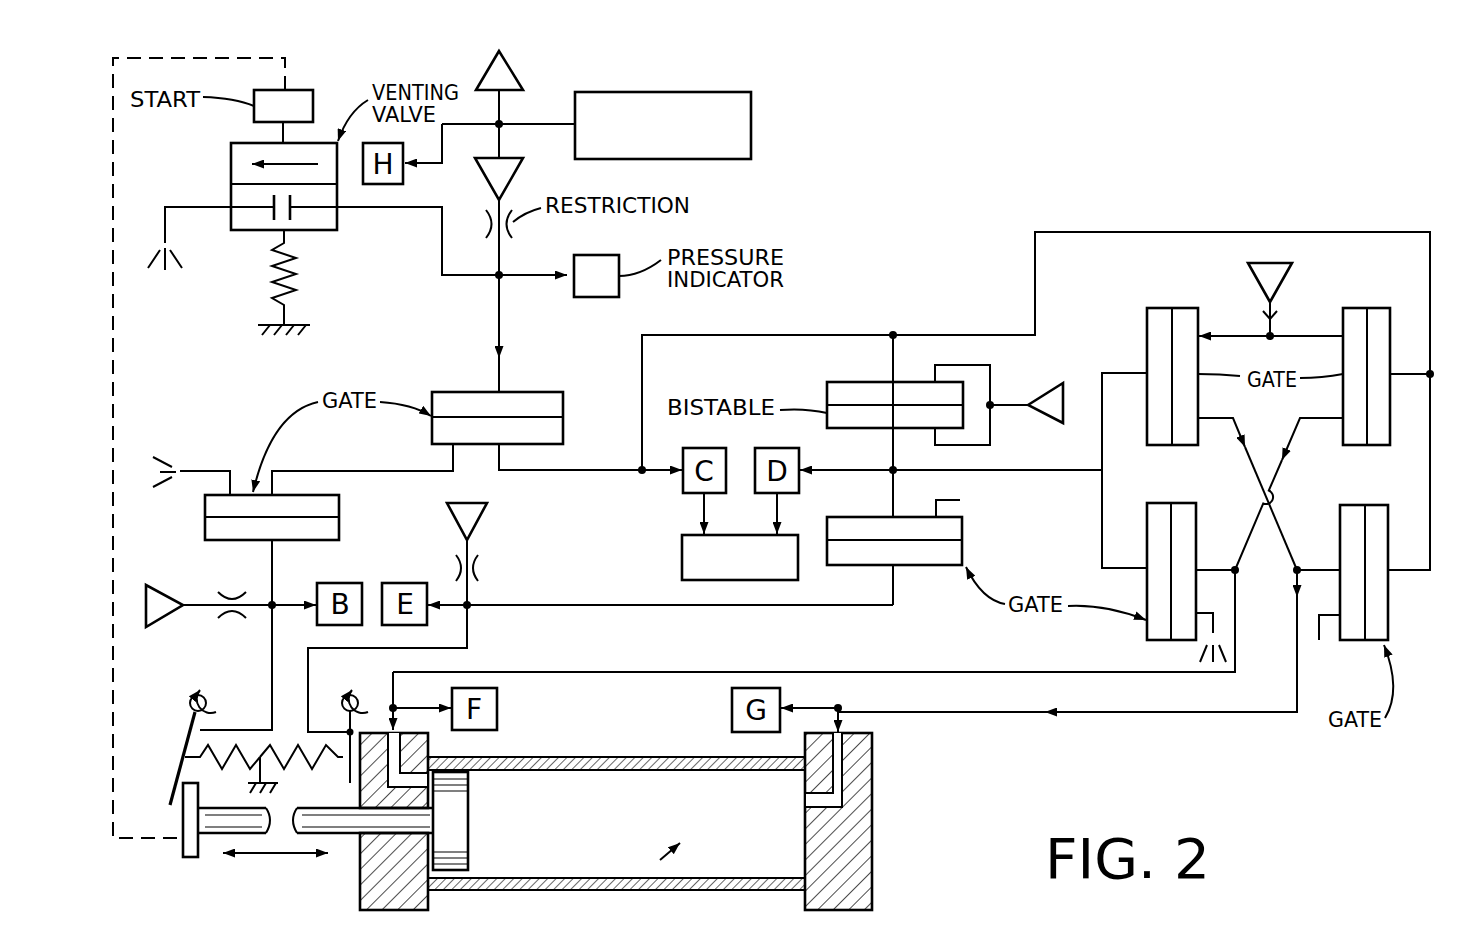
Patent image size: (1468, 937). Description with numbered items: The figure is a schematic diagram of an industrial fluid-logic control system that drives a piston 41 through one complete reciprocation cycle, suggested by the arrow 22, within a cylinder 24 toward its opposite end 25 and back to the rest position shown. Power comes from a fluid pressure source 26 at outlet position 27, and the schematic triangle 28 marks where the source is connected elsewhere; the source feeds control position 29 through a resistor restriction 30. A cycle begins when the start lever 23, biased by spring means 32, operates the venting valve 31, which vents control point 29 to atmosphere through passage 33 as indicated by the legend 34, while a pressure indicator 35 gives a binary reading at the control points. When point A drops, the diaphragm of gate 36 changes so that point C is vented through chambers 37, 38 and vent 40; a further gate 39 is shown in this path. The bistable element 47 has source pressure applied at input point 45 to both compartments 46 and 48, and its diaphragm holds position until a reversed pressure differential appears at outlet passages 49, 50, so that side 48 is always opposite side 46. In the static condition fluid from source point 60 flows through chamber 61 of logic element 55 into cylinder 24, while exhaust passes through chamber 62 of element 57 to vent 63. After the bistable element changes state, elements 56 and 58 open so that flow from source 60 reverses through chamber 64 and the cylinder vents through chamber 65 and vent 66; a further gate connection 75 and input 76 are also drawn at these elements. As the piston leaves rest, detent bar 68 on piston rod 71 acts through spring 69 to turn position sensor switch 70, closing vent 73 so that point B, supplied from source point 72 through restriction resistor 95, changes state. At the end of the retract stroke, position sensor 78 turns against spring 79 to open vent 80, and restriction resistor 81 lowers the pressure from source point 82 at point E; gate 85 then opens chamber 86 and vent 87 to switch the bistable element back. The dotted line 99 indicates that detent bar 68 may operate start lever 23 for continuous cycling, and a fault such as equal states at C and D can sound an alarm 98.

The arrow 22 is at (281, 858).
The start lever 23 is at (313, 96).
The cylinder 24 is at (652, 889).
The opposite end 25 is at (805, 848).
The fluid pressure source 26 is at (751, 140).
The outlet position 27 is at (504, 122).
The schematic triangle 28 is at (510, 74).
The control position 29 is at (495, 280).
The resistor restriction 30 is at (486, 224).
The venting valve 31 is at (231, 158).
The spring biasing means 32 is at (292, 292).
The passage 33 is at (165, 207).
The legend 34 is at (176, 283).
The pressure indicator 35 is at (576, 291).
The gate 36 is at (462, 389).
The chamber 37 is at (432, 431).
The chamber 38 is at (339, 509).
The gate 39 is at (205, 526).
The vent 40 is at (204, 470).
The piston 41 is at (452, 849).
The input point 45 is at (1050, 389).
The compartment 46 is at (867, 385).
The bistable element 47 is at (827, 394).
The compartment 48 is at (912, 420).
The outlet passage 49 is at (896, 352).
The outlet passage 50 is at (890, 462).
The logic element 55 is at (1166, 306).
The logic element 56 is at (1376, 305).
The logic element 57 is at (1165, 500).
The logic element 58 is at (1381, 503).
The source point 60 is at (1281, 283).
The chamber 61 is at (1192, 328).
The chamber 62 is at (1193, 531).
The vent 63 is at (1213, 613).
The chamber 64 is at (1342, 447).
The chamber 65 is at (1357, 641).
The vent 66 is at (1333, 613).
The detent bar 68 is at (185, 808).
The spring 69 is at (214, 749).
The mechanical position sensor switch 70 is at (183, 745).
The piston rod 71 is at (221, 821).
The source point 72 is at (170, 592).
The vent 73 is at (235, 730).
The gate output 75 is at (1381, 448).
The gate input 76 is at (1390, 608).
The position sensor 78 is at (346, 750).
The spring 79 is at (325, 765).
The vent 80 is at (325, 729).
The restriction resistor 81 is at (482, 567).
The source point 82 is at (491, 518).
The gate 85 is at (963, 538).
The chamber 86 is at (868, 516).
The vent 87 is at (962, 500).
The restriction resistor 95 is at (238, 598).
The alarm 98 is at (682, 553).
The dotted line 99 is at (113, 420).